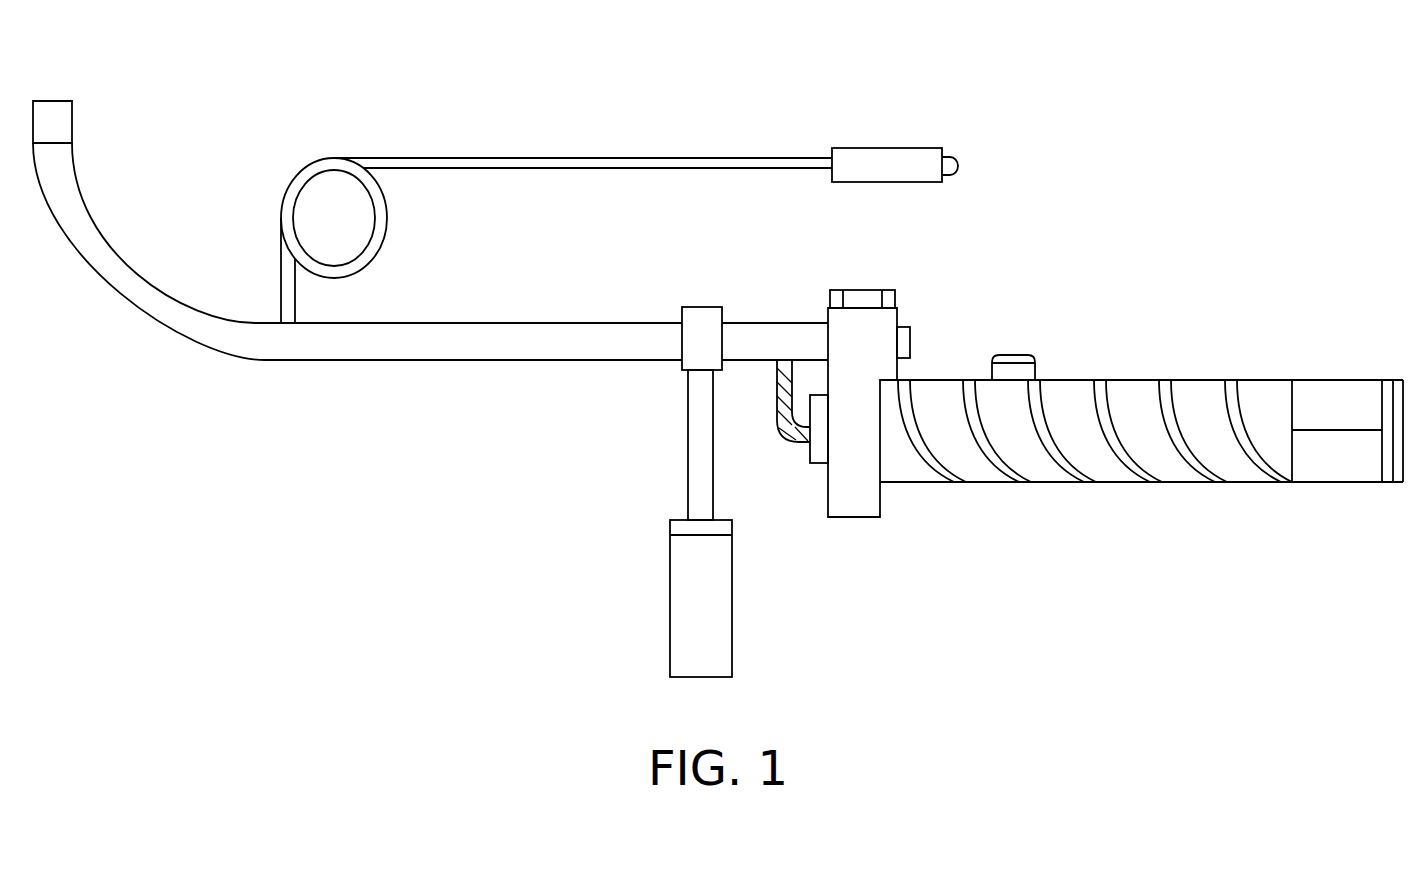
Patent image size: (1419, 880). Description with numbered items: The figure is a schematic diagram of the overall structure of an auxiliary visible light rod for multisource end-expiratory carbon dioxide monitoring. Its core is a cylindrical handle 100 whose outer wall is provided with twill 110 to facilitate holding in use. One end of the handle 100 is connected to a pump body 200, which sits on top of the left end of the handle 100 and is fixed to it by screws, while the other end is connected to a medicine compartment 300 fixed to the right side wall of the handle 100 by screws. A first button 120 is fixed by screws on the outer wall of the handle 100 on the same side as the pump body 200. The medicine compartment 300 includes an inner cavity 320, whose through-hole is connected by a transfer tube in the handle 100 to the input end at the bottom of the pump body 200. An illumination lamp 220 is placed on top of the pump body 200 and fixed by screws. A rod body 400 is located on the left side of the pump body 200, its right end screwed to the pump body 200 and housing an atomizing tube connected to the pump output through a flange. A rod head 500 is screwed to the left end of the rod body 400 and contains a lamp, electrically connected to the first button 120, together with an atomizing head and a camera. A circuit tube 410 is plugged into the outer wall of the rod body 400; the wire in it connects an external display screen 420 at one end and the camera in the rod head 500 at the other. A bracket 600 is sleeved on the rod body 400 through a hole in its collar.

The handle 100 is at (1198, 380).
The twill 110 is at (1107, 380).
The first button 120 is at (1015, 372).
The pump body 200 is at (872, 323).
The illumination lamp 220 is at (862, 290).
The medicine compartment 300 is at (1302, 450).
The inner cavity 320 is at (1360, 403).
The rod body 400 is at (575, 360).
The circuit tube 410 is at (583, 158).
The display screen 420 is at (868, 162).
The rod head 500 is at (52, 122).
The bracket 600 is at (702, 307).